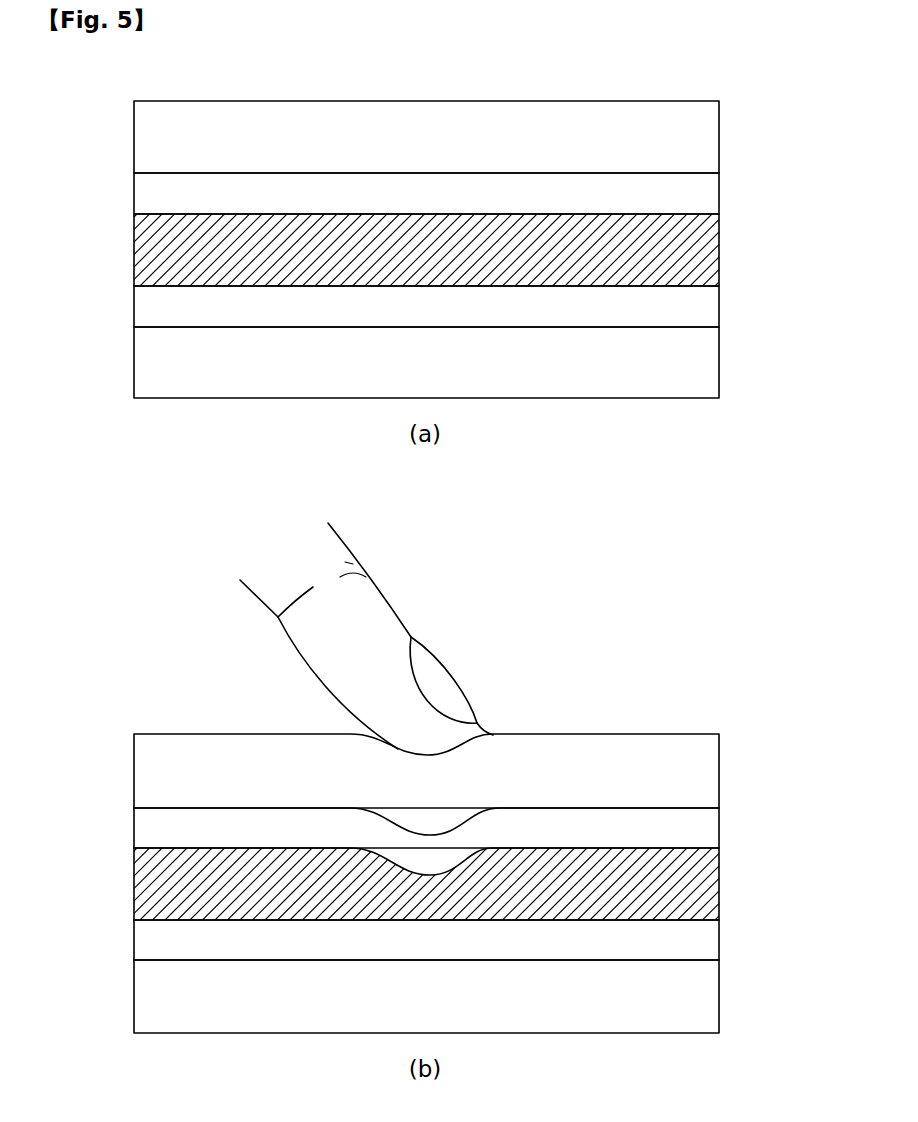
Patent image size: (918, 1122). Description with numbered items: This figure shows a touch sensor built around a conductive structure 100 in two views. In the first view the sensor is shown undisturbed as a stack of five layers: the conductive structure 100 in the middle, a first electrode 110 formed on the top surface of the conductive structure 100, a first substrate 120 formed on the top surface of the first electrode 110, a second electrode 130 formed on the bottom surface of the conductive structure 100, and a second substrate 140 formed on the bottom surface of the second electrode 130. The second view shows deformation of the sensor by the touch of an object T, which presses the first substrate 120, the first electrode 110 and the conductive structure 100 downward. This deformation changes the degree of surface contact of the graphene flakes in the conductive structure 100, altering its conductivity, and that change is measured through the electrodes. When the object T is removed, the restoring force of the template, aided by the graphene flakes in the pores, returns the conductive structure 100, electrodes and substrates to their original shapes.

The conductive structure 100 is at (711, 255).
The first electrode 110 is at (711, 196).
The first substrate 120 is at (711, 140).
The second electrode 130 is at (711, 310).
The second substrate 140 is at (711, 364).
The object T is at (382, 590).